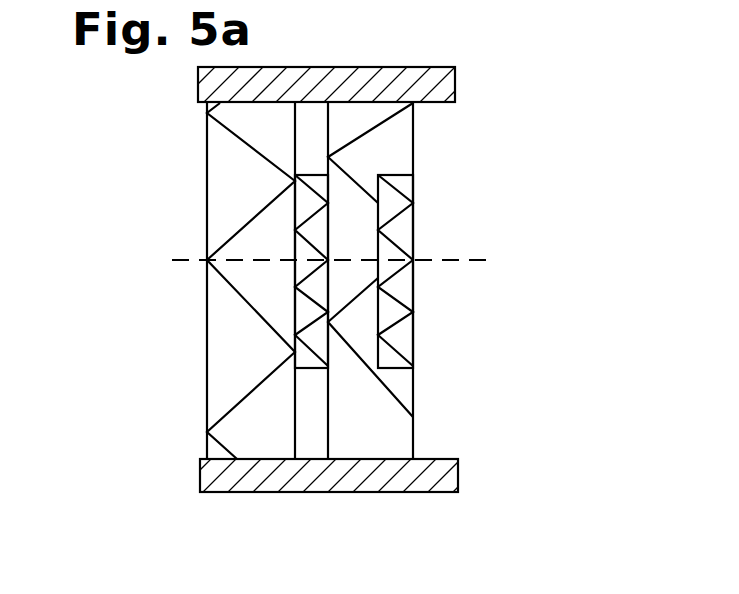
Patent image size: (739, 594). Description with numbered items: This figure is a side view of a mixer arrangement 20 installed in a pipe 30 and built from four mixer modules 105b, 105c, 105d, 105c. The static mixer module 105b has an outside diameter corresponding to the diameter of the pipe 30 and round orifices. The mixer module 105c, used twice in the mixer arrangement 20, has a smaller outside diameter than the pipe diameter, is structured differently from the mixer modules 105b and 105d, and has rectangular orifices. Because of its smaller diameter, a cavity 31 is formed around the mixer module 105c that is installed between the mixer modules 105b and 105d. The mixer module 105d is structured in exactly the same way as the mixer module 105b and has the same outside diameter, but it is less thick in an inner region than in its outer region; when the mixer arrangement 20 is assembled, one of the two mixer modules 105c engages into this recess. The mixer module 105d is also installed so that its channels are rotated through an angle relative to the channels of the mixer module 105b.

The pipe 30 is at (453, 83).
The mixer arrangement 20 is at (478, 427).
The cavity 31 is at (308, 430).
The mixer module 105b is at (203, 188).
The mixer module 105c is at (315, 282).
The mixer module 105d is at (417, 145).